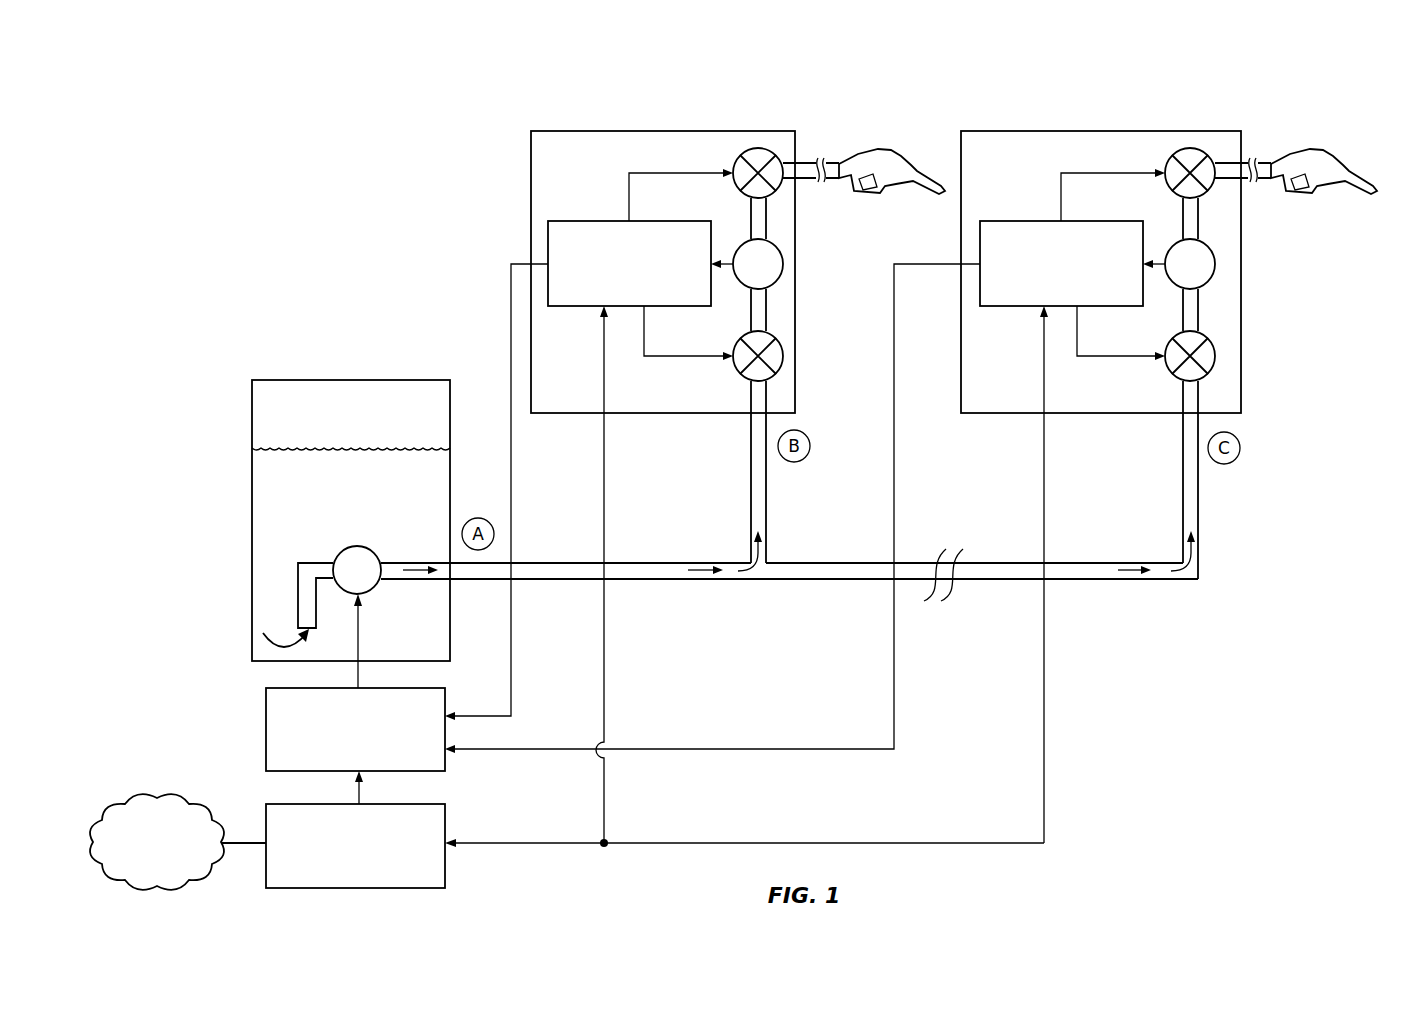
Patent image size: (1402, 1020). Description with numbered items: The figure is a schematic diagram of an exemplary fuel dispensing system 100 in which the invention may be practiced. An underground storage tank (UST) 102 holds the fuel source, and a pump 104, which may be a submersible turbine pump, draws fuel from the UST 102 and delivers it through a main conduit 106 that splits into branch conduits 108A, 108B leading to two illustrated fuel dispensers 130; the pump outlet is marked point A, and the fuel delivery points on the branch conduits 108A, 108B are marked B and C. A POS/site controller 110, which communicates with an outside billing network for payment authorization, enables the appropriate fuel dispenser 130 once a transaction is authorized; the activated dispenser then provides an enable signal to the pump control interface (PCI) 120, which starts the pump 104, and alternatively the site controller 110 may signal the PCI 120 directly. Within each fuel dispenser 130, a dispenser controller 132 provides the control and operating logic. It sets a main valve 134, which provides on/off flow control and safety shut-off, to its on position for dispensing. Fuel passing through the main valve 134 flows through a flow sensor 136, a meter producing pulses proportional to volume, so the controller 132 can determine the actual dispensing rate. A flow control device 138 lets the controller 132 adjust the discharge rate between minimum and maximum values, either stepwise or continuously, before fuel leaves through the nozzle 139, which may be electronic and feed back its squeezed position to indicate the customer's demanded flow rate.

The fuel dispensing system 100 is at (922, 91).
The underground storage tank (UST) 102 is at (397, 379).
The pump 104 is at (347, 546).
The main conduit 106 is at (858, 578).
The branch conduit 108A is at (767, 497).
The branch conduit 108B is at (1181, 497).
The POS/site controller 110 is at (265, 818).
The pump control interface (PCI) 120 is at (265, 716).
The fuel dispenser 130 is at (750, 130).
The dispenser controller 132 is at (607, 220).
The main valve 134 is at (775, 373).
The flow sensor 136 is at (775, 281).
The flow control device 138 is at (775, 190).
The nozzle 139 is at (952, 186).